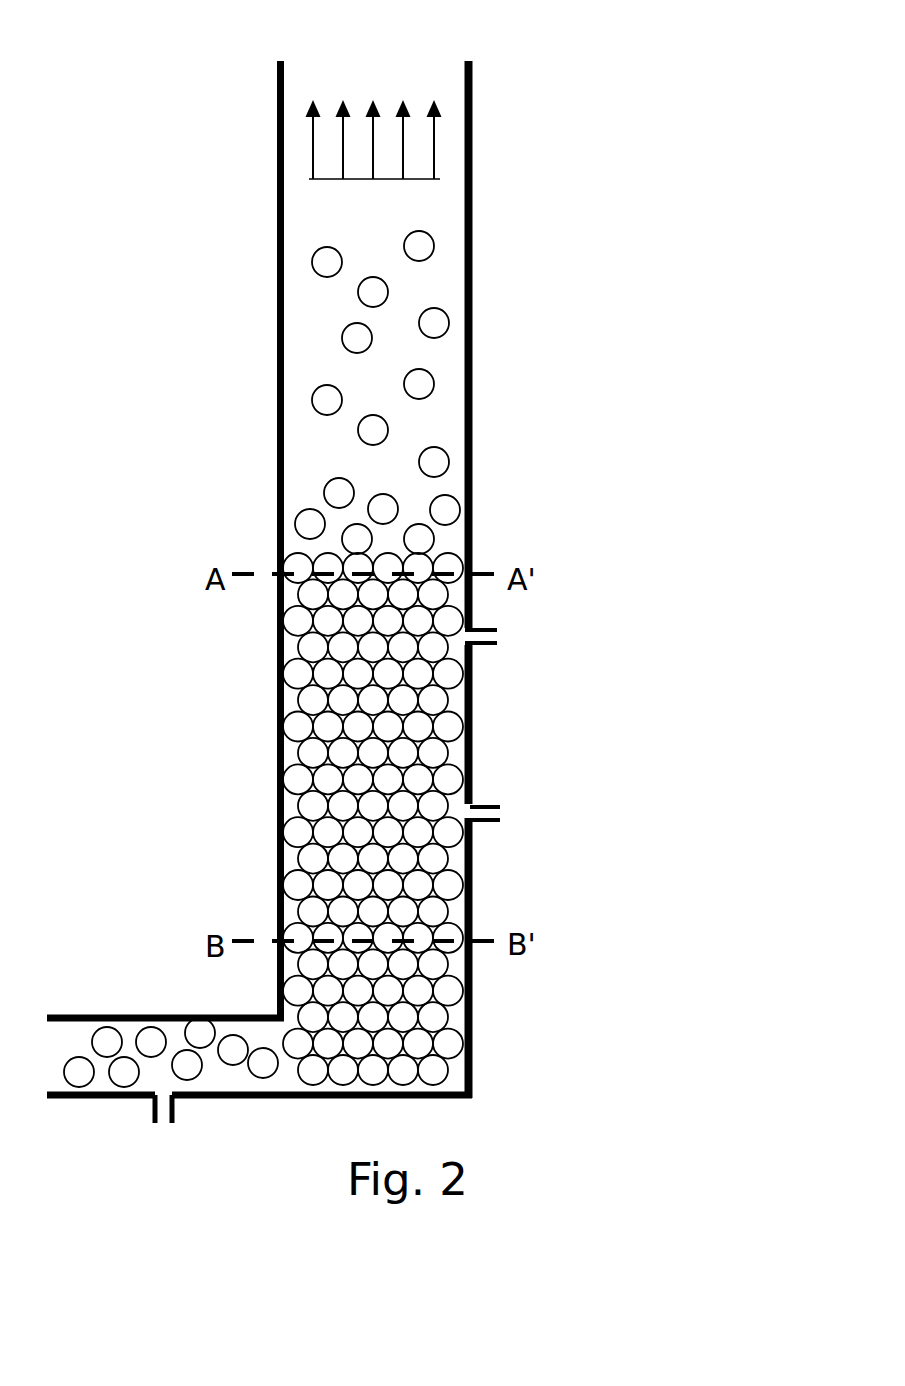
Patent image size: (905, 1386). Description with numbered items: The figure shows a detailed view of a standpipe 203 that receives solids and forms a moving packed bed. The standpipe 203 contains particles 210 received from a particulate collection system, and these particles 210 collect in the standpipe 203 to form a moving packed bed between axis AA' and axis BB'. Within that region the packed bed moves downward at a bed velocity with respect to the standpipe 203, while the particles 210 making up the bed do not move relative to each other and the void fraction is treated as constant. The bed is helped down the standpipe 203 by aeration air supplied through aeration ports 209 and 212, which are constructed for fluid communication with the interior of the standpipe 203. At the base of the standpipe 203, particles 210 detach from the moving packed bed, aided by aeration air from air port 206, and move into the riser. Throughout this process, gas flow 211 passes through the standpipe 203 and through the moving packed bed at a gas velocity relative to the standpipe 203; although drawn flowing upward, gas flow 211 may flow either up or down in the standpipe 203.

The standpipe 203 is at (472, 420).
The air port 206 is at (155, 1125).
The aeration port 209 is at (500, 820).
The particles 210 is at (412, 289).
The gas flow 211 is at (385, 100).
The aeration port 212 is at (498, 643).